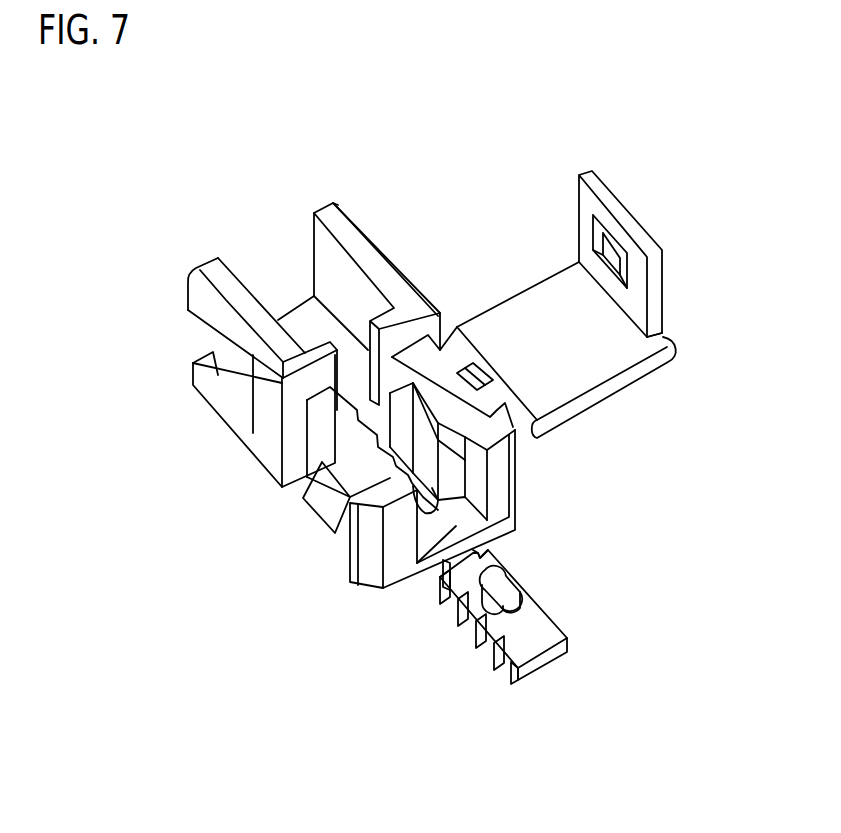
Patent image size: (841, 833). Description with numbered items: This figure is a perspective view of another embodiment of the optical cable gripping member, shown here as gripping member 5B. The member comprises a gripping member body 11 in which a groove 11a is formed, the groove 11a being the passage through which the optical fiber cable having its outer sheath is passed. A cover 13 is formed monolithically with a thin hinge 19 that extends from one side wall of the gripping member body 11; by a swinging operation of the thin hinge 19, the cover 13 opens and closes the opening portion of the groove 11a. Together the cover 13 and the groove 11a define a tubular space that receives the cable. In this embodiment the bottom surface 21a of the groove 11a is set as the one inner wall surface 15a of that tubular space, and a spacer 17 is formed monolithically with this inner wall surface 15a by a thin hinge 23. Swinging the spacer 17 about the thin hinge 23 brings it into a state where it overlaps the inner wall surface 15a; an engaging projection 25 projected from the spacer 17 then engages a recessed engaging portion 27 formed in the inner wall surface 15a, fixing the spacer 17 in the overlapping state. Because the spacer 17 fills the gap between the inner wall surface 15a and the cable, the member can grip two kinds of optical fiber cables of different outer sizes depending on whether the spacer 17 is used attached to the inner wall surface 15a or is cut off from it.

The connector housing 5B is at (222, 447).
The gripping member body 11 is at (372, 222).
The groove 11a is at (457, 526).
The cover 13 is at (613, 355).
The one inner wall surface 15a is at (472, 480).
The spacer 17 is at (527, 643).
The thin hinge 19 is at (450, 355).
The bottom surface 21a is at (445, 516).
The thin hinge 23 is at (463, 557).
The engaging projection 25 is at (505, 590).
The recessed engaging portion 27 is at (455, 560).